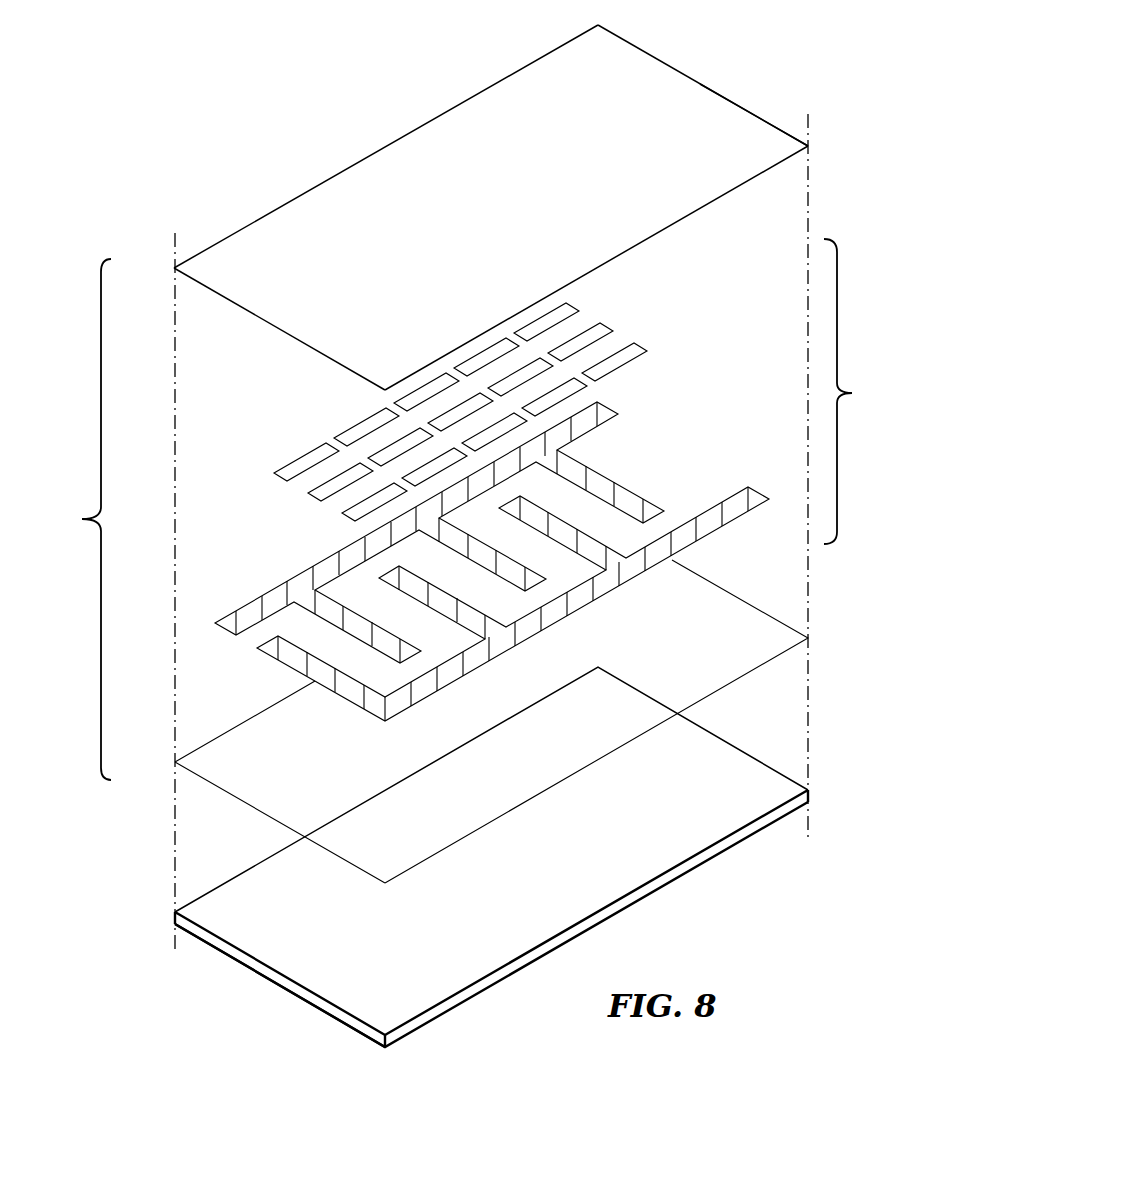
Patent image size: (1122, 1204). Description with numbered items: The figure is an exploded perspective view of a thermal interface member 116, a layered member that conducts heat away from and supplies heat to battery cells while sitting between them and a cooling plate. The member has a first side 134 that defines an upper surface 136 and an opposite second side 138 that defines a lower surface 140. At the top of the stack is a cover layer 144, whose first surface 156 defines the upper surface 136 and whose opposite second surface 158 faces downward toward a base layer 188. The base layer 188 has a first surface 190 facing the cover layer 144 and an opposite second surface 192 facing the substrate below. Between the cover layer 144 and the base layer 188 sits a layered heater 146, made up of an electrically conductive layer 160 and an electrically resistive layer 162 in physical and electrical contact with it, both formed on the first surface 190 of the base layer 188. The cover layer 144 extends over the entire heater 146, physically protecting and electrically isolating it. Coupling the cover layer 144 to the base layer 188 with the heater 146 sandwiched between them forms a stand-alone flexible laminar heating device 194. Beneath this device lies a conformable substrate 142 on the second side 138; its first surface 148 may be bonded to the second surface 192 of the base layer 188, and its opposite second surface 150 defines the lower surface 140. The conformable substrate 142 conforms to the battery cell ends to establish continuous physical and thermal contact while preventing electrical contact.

The thermal interface member 116 is at (300, 165).
The first side 134 is at (492, 207).
The upper surface 136 is at (703, 85).
The first surface 156 is at (753, 86).
The cover layer 144 is at (772, 122).
The second surface 158 is at (220, 294).
The layered heater 146 is at (857, 475).
The electrically resistive layer 162 is at (282, 458).
The electrically conductive layer 160 is at (347, 706).
The first surface 190 is at (515, 721).
The base layer 188 is at (810, 638).
The second surface 192 is at (235, 796).
The flexible laminar heating device 194 is at (99, 593).
The second side 138 is at (492, 857).
The first surface 148 is at (683, 843).
The conformable substrate 142 is at (812, 798).
The lower surface 140 is at (435, 924).
The second surface 150 is at (303, 1004).